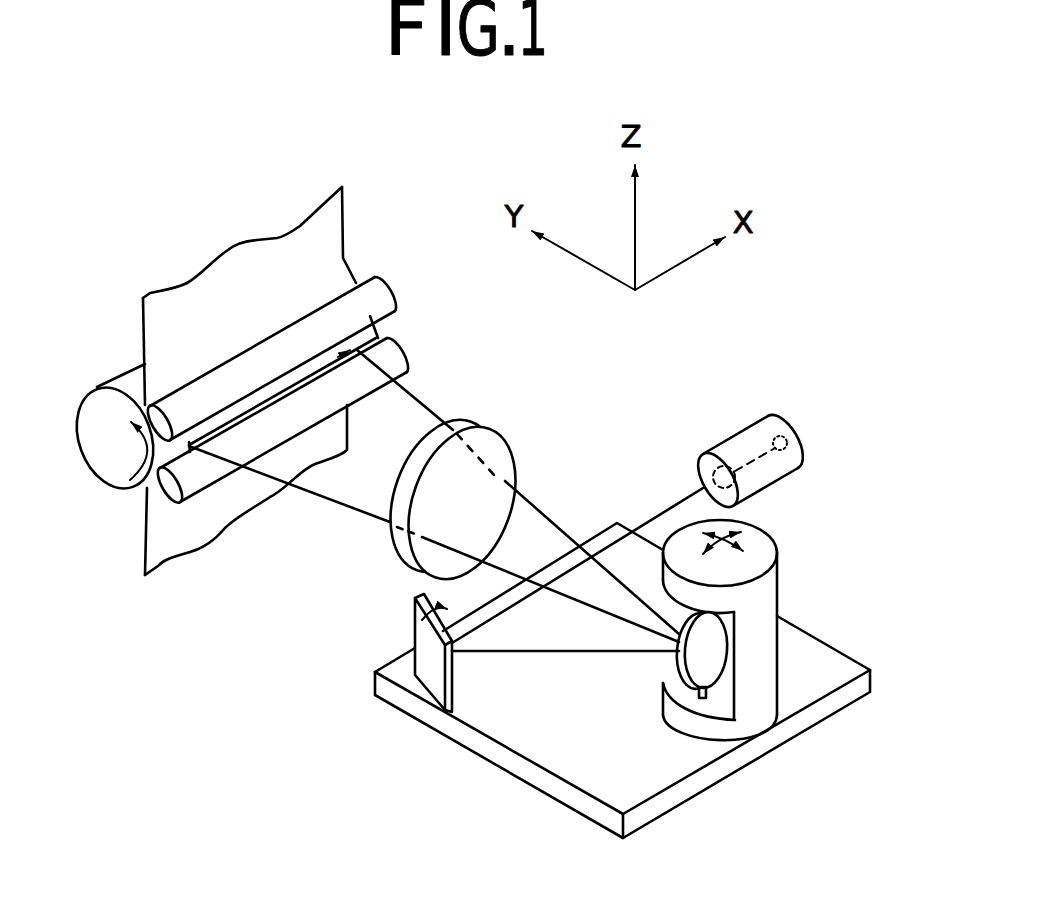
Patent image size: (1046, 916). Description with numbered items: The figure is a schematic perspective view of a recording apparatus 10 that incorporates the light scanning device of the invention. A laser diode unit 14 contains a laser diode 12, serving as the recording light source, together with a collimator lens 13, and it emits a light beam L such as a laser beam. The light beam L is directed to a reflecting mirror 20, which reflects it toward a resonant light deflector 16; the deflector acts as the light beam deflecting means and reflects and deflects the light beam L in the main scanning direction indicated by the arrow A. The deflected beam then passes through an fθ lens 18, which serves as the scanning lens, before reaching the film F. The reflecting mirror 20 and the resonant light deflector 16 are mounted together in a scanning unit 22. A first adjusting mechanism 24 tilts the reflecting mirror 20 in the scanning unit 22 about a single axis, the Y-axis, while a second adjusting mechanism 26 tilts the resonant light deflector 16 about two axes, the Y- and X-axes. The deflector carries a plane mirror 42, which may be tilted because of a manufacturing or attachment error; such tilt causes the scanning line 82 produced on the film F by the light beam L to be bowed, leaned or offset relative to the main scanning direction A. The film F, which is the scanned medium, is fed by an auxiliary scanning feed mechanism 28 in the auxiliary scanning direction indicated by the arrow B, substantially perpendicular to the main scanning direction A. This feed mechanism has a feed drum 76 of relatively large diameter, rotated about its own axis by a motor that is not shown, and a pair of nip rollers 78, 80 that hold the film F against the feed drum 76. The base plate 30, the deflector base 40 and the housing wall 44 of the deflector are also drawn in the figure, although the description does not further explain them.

The recording apparatus 10 is at (266, 109).
The laser diode 12 is at (793, 437).
The collimator lens 13 is at (727, 463).
The laser diode unit 14 is at (760, 420).
The resonant light deflector 16 is at (745, 681).
The fθ lens 18 is at (498, 442).
The reflecting mirror 20 is at (430, 672).
The scanning unit 22 is at (530, 797).
The first adjusting mechanism 24 is at (407, 613).
The second adjusting mechanism 26 is at (783, 652).
The auxiliary scanning feed mechanism 28 is at (135, 506).
The base plate 30 is at (690, 798).
The deflector base 40 is at (712, 736).
The plane mirror 42 is at (698, 674).
The deflector housing wall 44 is at (763, 705).
The feed drum 76 is at (102, 471).
The nip roller 78 is at (403, 348).
The nip roller 80 is at (393, 287).
The scanning line 82 is at (255, 403).
The main scanning direction A is at (323, 382).
The auxiliary scanning direction B is at (124, 440).
The film F is at (330, 231).
The light beam L is at (666, 507).